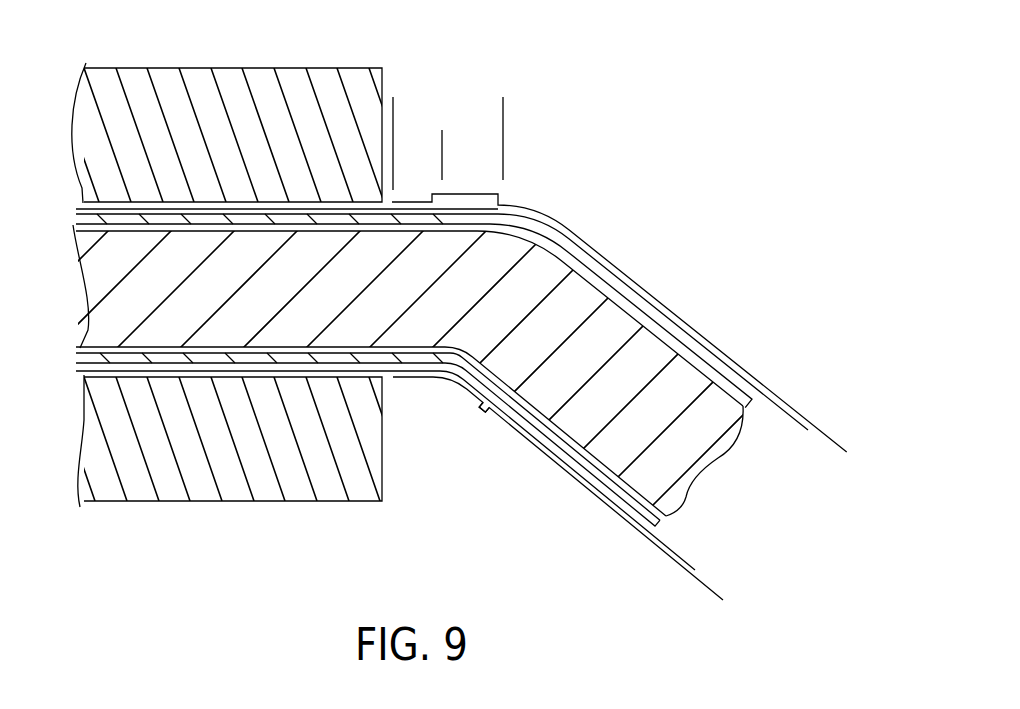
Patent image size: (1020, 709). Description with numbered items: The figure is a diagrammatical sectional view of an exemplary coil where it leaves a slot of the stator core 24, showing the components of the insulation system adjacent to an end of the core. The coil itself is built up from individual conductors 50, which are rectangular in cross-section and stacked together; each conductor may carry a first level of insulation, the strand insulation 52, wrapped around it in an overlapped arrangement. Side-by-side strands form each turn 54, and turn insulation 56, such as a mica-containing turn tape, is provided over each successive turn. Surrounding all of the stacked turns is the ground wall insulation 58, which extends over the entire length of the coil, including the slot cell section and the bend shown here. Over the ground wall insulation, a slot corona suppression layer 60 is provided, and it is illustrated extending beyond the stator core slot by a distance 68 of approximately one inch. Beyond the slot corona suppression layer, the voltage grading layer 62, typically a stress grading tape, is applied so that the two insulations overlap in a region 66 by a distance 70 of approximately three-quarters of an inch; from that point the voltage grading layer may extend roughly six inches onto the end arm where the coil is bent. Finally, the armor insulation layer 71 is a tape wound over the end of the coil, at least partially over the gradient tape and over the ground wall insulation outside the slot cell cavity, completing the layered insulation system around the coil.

The stator core 24 is at (242, 90).
The individual conductors 50 is at (479, 380).
The strand insulation 52 is at (479, 380).
The turn 54 is at (479, 380).
The turn insulation 56 is at (697, 452).
The ground wall insulation 58 is at (78, 219).
The slot corona suppression layer 60 is at (78, 208).
The voltage grading layer 62 is at (667, 542).
The region 66 is at (480, 402).
The distance 68 is at (502, 113).
The distance 70 is at (535, 160).
The armor insulation layer 71 is at (826, 434).